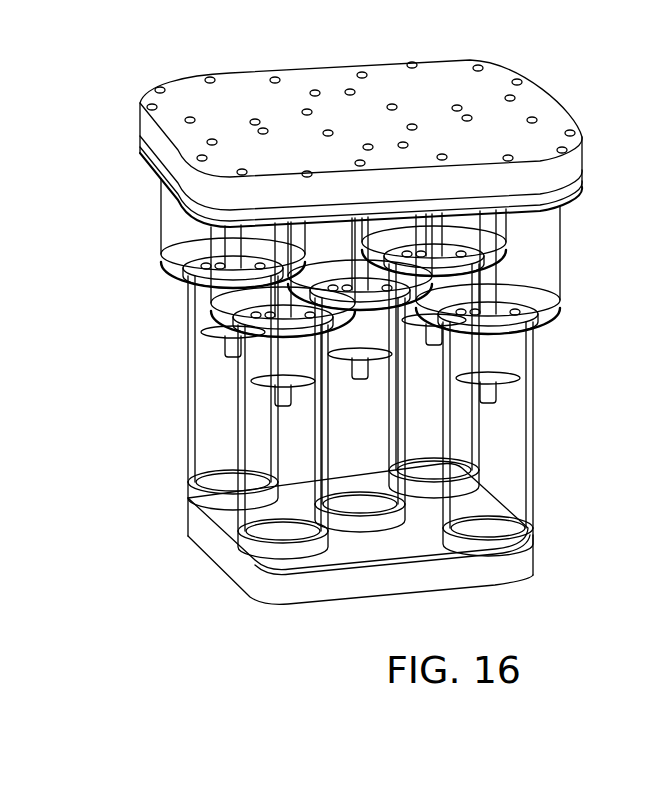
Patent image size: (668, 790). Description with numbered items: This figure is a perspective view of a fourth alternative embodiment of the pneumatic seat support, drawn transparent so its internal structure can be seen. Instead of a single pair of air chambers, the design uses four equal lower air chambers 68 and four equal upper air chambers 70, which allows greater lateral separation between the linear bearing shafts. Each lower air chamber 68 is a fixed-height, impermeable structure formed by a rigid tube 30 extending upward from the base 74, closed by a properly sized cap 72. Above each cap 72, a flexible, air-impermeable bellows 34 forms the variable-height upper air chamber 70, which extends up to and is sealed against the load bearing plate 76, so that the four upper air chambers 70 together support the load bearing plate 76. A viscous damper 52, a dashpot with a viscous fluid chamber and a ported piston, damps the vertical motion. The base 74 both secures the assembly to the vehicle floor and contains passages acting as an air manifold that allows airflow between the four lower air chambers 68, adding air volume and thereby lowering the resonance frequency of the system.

The load bearing plate 76 is at (533, 96).
The upper air chamber 70 is at (128, 207).
The bellows 34 is at (563, 258).
The cap 72 is at (527, 350).
The rigid tube 30 is at (528, 440).
The lower air chamber 68 is at (146, 403).
The viscous damper 52 is at (332, 441).
The base 74 is at (270, 583).